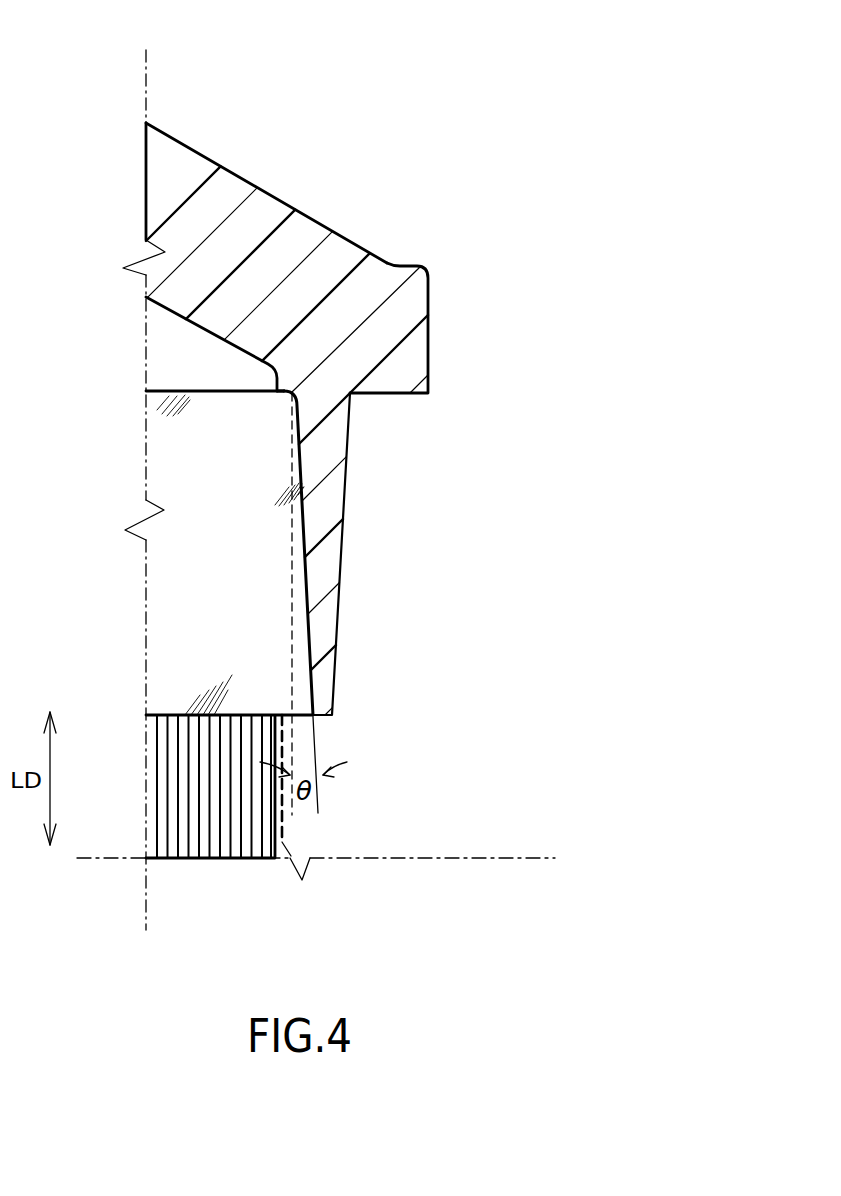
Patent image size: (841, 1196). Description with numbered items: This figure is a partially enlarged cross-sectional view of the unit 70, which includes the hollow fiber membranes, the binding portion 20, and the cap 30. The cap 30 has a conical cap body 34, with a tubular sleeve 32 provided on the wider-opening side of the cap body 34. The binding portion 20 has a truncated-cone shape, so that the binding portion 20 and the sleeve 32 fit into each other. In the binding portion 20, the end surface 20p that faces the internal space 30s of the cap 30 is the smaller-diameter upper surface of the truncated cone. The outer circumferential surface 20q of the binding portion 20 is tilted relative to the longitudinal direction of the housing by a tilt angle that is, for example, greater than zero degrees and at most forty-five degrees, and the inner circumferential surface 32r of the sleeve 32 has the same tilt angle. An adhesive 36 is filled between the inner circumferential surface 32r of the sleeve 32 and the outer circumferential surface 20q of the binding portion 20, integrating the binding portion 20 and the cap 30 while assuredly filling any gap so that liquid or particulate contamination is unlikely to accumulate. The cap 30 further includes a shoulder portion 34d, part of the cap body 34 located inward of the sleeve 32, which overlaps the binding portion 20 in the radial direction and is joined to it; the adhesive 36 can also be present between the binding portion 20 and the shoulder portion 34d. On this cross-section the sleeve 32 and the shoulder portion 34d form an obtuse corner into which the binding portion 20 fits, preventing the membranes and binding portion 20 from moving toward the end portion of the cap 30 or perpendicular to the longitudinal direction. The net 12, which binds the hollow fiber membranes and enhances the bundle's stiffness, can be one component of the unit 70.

The unit 70 is at (371, 90).
The cap 30 is at (148, 182).
The cap body 34 is at (260, 213).
The shoulder portion 34d is at (287, 383).
The internal space 30s is at (168, 345).
The sleeve 32 is at (322, 458).
The inner circumferential surface 32r is at (298, 632).
The adhesive 36 is at (305, 515).
The binding portion 20 is at (167, 463).
The end surface 20p is at (180, 392).
The outer circumferential surface 20q is at (305, 597).
The net 12 is at (282, 823).